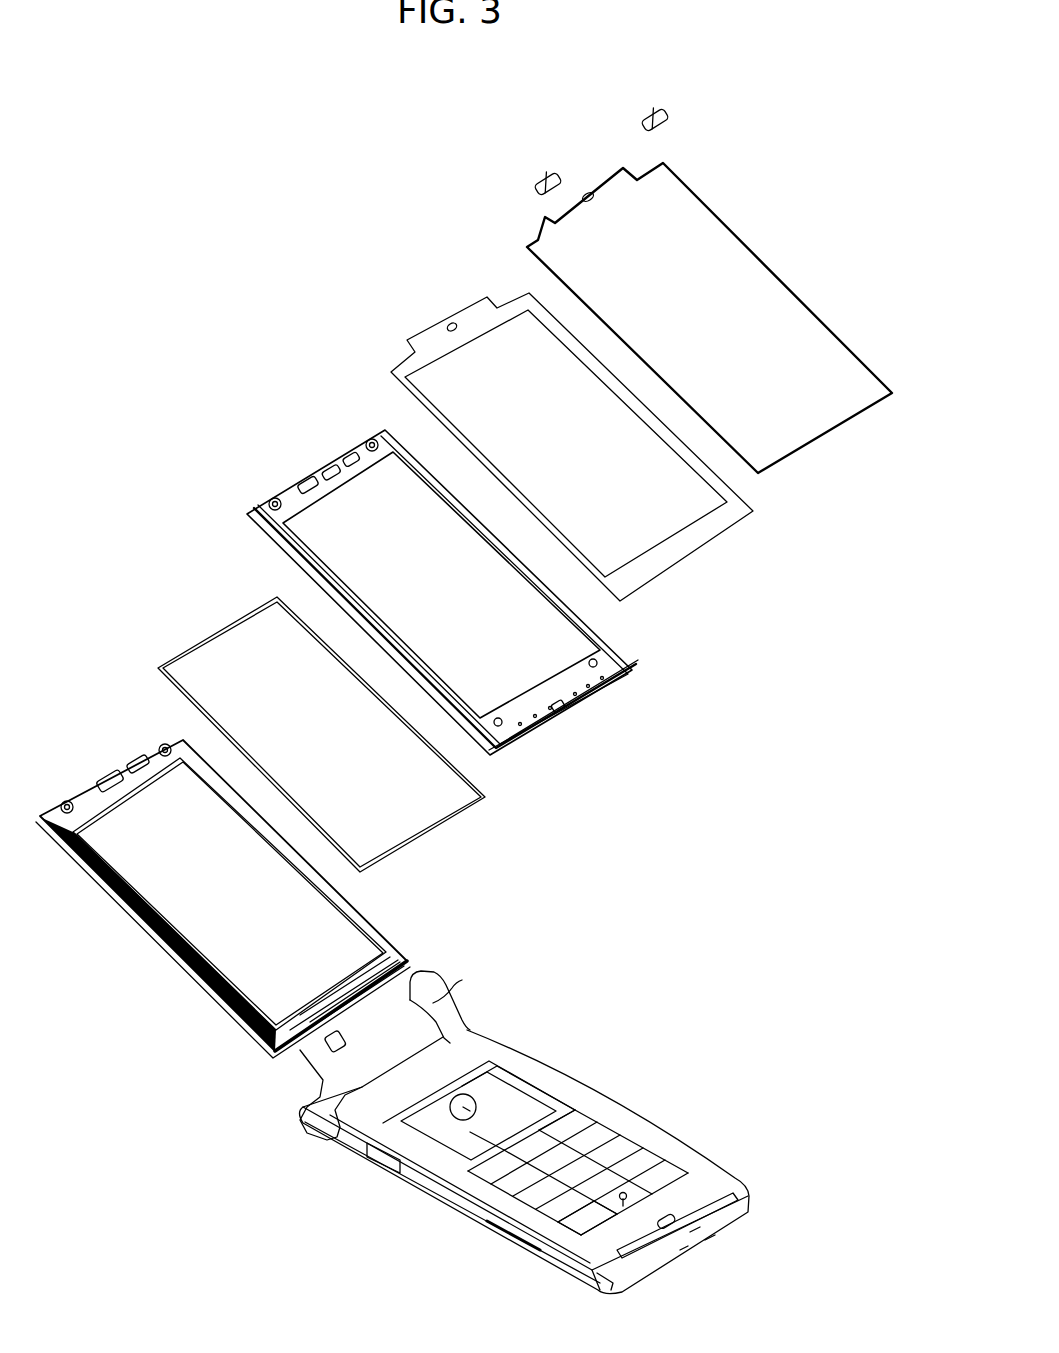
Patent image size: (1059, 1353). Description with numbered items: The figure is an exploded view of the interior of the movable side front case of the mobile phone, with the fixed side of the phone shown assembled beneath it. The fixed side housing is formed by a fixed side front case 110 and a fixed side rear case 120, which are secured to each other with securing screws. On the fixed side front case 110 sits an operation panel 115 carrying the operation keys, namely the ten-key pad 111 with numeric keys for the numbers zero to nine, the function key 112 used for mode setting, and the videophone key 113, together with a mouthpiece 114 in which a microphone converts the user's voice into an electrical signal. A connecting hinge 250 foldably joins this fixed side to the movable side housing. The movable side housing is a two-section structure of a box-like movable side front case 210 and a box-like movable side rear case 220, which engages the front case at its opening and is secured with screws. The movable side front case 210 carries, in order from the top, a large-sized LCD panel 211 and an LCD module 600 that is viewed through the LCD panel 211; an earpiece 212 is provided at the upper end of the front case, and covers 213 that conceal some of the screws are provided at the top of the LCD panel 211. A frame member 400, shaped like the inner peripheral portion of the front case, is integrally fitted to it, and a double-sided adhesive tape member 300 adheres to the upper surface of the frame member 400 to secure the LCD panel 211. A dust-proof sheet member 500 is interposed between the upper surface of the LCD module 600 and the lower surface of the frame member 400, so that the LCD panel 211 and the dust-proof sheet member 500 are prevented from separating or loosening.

The fixed side front case 110 is at (497, 1213).
The ten-key pad 111 is at (688, 1132).
The function key 112 is at (497, 1107).
The videophone key 113 is at (573, 1230).
The mouthpiece 114 is at (672, 1215).
The operation panel 115 is at (548, 1112).
The fixed side rear case 120 is at (543, 1253).
The movable side front case 210 is at (355, 437).
The LCD panel 211 is at (730, 240).
The earpiece 212 is at (93, 773).
The covers 213 is at (640, 117).
The movable side rear case 220 is at (147, 740).
The connecting hinge 250 is at (450, 1008).
The double-sided adhesive tape member 300 is at (723, 523).
The frame member 400 is at (607, 657).
The dust-proof sheet member 500 is at (487, 797).
The LCD module 600 is at (180, 917).